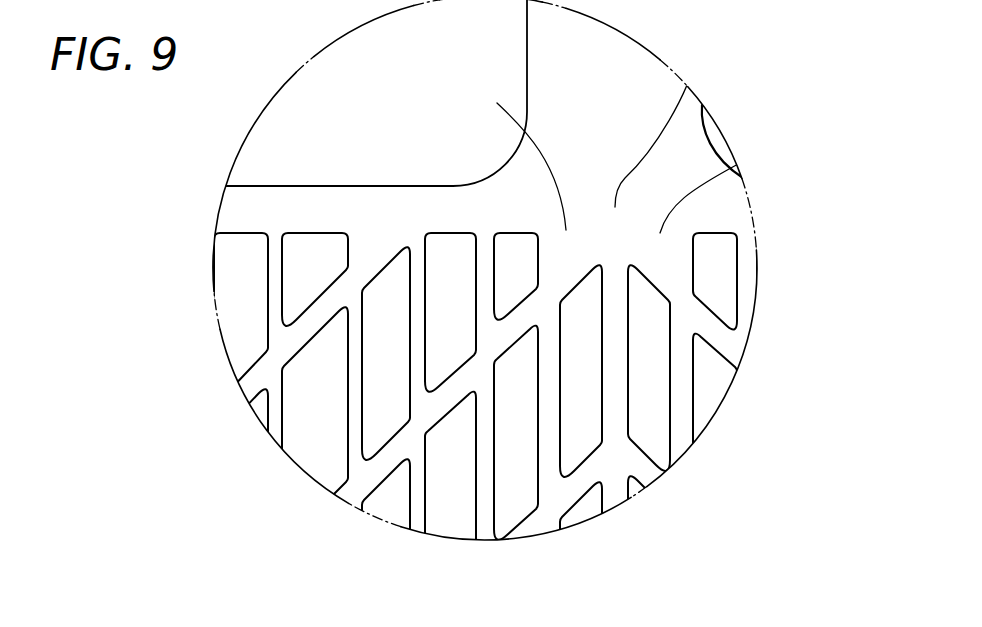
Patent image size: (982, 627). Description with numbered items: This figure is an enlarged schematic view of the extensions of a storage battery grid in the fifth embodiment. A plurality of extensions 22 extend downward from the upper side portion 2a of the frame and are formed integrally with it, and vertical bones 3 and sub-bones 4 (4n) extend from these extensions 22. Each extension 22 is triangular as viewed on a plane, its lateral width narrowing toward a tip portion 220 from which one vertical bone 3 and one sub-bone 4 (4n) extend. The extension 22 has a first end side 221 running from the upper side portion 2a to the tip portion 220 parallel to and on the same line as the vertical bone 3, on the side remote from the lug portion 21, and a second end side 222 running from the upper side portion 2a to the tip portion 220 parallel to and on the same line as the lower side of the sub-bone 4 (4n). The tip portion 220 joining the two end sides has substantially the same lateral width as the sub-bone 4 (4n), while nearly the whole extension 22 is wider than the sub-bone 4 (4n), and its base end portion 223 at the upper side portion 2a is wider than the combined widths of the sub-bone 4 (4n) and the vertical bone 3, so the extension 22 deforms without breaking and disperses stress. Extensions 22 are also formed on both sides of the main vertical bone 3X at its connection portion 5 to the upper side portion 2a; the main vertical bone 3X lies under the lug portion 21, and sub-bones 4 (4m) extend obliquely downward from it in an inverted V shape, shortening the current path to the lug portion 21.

The vertical bone 3 is at (347, 436).
The main vertical bone 3X is at (630, 402).
The sub-bone 4 is at (398, 457).
The sub-bone 4n is at (277, 322).
The sub-bone 4m is at (578, 487).
The connection portion 5 is at (679, 118).
The lug portion 21 is at (527, 35).
The upper side portion 2a is at (410, 185).
The extension 22 is at (347, 247).
The tip portion 220 is at (357, 275).
The first end side 221 is at (348, 265).
The second end side 222 is at (380, 265).
The base end portion 223 is at (380, 233).